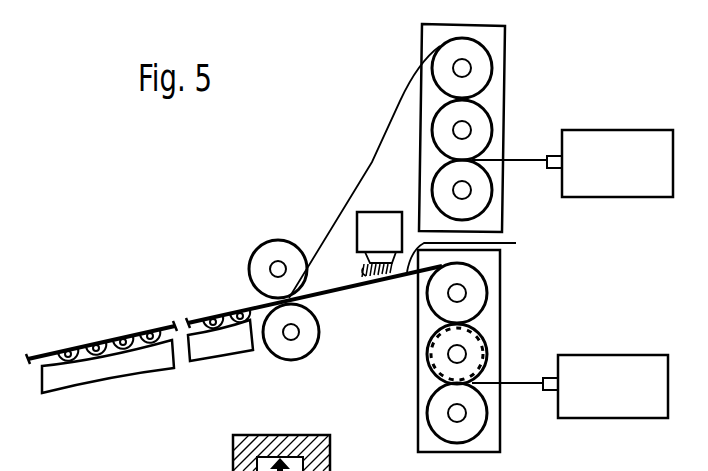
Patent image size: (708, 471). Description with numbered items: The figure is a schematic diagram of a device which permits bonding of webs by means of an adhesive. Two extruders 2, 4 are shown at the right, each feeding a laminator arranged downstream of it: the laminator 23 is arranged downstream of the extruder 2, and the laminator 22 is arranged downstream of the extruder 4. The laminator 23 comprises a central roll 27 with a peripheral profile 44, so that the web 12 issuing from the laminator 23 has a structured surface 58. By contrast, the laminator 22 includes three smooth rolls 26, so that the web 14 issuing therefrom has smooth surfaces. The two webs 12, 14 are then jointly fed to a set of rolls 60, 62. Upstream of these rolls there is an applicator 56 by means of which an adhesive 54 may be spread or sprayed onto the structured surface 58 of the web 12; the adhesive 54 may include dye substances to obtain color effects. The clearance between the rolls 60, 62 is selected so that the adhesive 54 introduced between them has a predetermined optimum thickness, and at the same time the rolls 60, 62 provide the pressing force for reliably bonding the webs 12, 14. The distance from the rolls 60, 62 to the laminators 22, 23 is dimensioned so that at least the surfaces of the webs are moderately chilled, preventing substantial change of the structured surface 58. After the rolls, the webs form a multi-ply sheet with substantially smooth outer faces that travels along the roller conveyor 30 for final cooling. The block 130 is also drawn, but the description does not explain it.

The extruder 2 is at (620, 396).
The extruder 4 is at (625, 166).
The web 12 is at (523, 389).
The web 14 is at (522, 157).
The laminator 22 is at (500, 42).
The laminator 23 is at (423, 437).
The smooth rolls 26 is at (442, 132).
The central roll 27 is at (478, 348).
The roller conveyor 30 is at (160, 375).
The peripheral profile 44 is at (430, 357).
The adhesive 54 is at (362, 278).
The applicator 56 is at (387, 218).
The structured surface 58 is at (471, 251).
The roll 60 is at (307, 343).
The roll 62 is at (270, 250).
The hatched block 130 is at (245, 460).